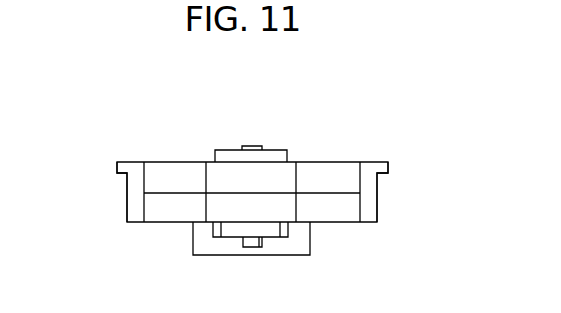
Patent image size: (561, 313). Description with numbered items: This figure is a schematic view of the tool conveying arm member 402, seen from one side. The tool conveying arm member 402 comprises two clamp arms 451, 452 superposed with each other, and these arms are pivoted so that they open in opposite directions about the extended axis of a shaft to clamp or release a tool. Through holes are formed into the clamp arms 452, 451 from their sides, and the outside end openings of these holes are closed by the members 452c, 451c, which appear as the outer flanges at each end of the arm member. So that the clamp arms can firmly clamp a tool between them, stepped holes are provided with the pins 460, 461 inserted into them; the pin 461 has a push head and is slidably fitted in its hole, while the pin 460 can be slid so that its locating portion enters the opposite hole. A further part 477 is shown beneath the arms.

The tool conveying arm member 402 is at (172, 148).
The clamp arm 451 is at (325, 162).
The closing member 451c is at (367, 194).
The clamp arm 452 is at (168, 215).
The closing member 452c is at (135, 198).
The pin 460 is at (252, 247).
The pin 461 is at (252, 145).
The base plate 477 is at (295, 243).